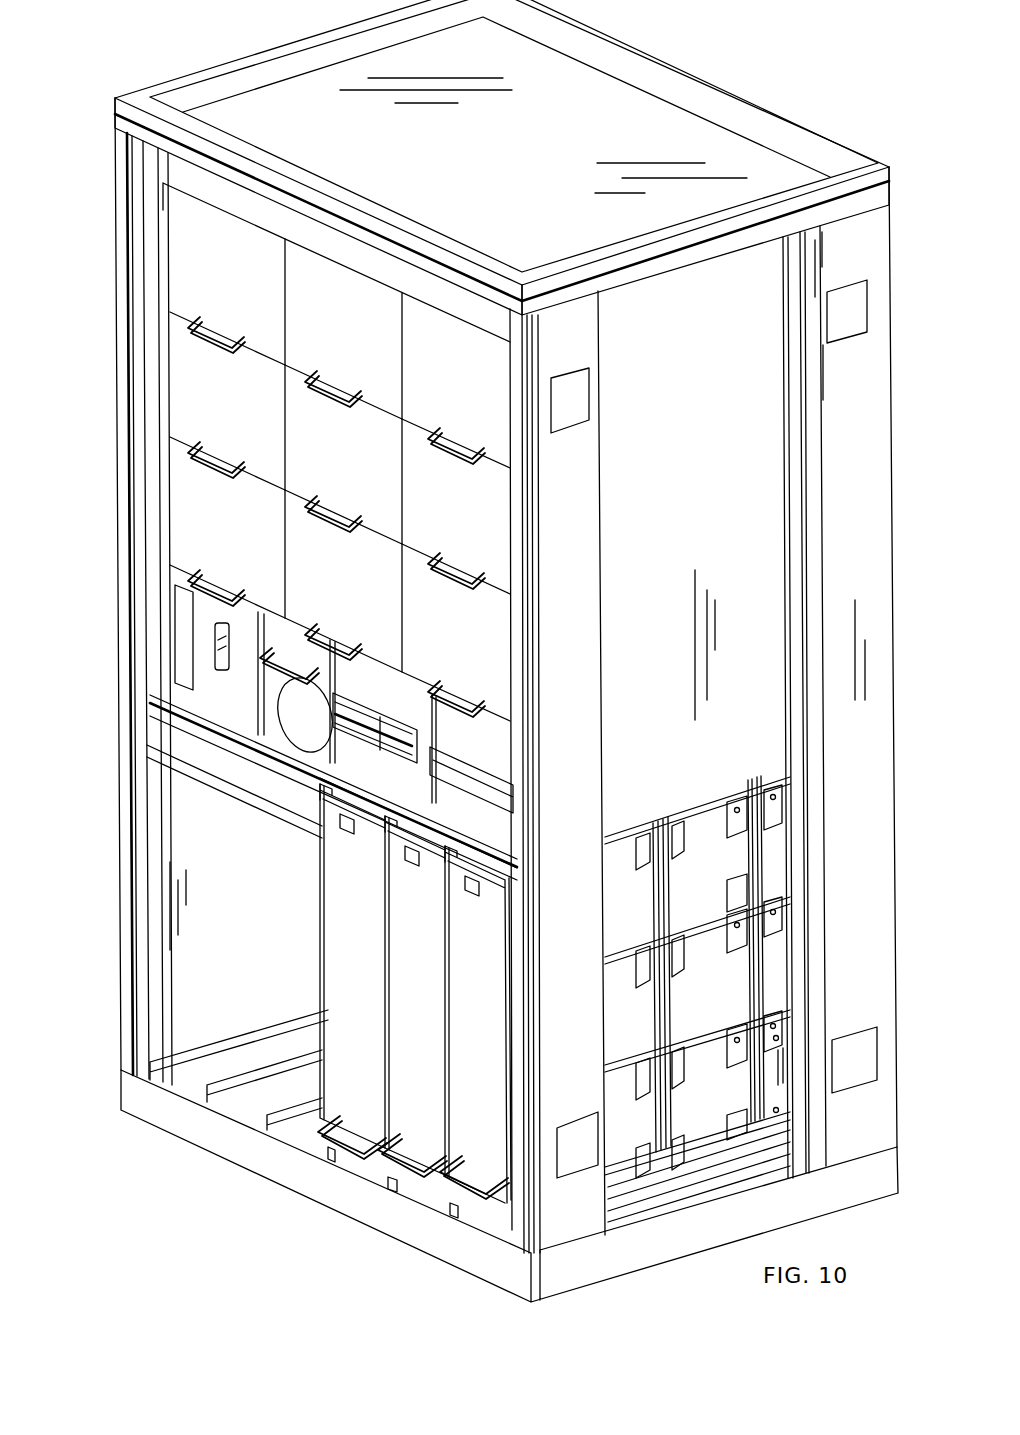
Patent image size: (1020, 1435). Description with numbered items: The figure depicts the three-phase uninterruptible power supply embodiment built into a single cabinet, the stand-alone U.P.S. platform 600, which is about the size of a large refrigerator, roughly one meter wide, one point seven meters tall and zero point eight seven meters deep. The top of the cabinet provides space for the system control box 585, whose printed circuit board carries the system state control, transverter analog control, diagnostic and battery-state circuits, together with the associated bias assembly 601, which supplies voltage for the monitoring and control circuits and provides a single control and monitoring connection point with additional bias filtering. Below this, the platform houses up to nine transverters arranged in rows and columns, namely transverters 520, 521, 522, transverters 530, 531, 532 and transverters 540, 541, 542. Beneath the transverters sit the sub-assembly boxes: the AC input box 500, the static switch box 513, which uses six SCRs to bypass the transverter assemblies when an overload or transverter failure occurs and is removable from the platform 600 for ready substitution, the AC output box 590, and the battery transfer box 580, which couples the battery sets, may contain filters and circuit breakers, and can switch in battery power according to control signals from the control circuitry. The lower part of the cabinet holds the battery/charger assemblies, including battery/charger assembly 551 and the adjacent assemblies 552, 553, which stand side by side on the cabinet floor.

The U.P.S. platform 600 is at (682, 46).
The bias assembly 601 is at (400, 270).
The control box 585 is at (180, 178).
The transverter 522 is at (185, 218).
The transverter 532 is at (298, 267).
The transverter 542 is at (417, 323).
The transverter 521 is at (183, 347).
The transverter 531 is at (318, 420).
The transverter 541 is at (455, 500).
The transverter 520 is at (178, 483).
The transverter 530 is at (395, 548).
The transverter 540 is at (440, 600).
The AC input box 500 is at (218, 693).
The static switch box 513 is at (293, 712).
The AC output box 590 is at (348, 758).
The battery transfer box 580 is at (390, 823).
The battery/charger assembly 551 is at (348, 918).
The battery box 552 is at (410, 980).
The battery box 553 is at (470, 1077).